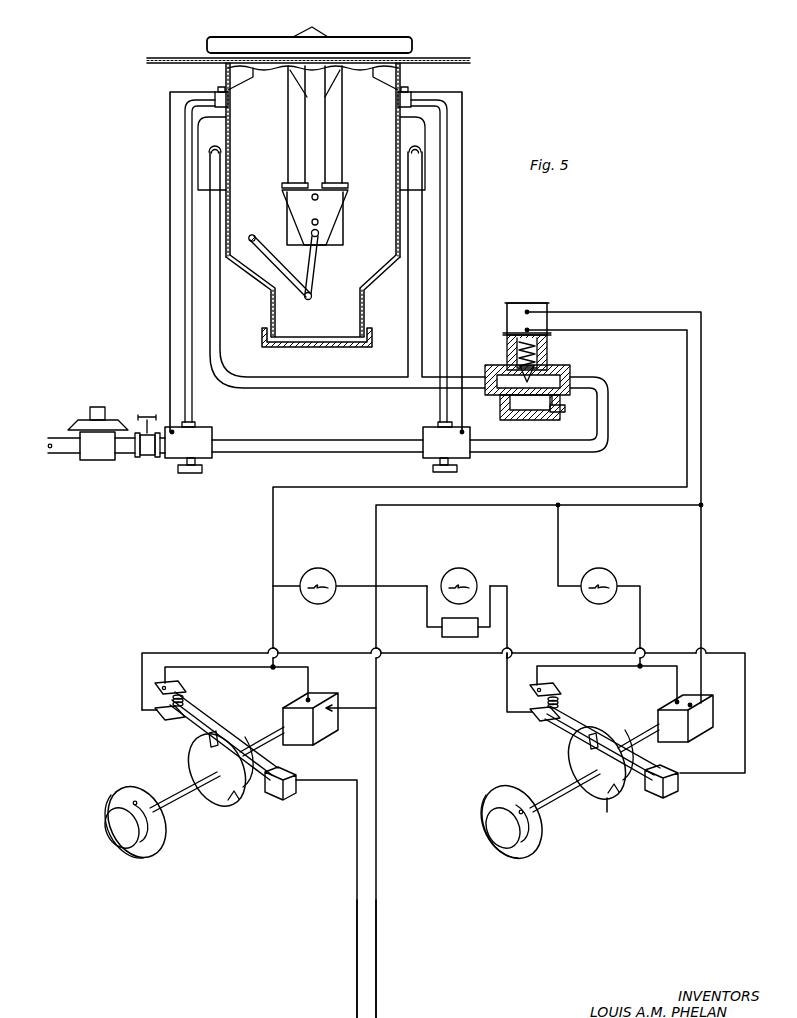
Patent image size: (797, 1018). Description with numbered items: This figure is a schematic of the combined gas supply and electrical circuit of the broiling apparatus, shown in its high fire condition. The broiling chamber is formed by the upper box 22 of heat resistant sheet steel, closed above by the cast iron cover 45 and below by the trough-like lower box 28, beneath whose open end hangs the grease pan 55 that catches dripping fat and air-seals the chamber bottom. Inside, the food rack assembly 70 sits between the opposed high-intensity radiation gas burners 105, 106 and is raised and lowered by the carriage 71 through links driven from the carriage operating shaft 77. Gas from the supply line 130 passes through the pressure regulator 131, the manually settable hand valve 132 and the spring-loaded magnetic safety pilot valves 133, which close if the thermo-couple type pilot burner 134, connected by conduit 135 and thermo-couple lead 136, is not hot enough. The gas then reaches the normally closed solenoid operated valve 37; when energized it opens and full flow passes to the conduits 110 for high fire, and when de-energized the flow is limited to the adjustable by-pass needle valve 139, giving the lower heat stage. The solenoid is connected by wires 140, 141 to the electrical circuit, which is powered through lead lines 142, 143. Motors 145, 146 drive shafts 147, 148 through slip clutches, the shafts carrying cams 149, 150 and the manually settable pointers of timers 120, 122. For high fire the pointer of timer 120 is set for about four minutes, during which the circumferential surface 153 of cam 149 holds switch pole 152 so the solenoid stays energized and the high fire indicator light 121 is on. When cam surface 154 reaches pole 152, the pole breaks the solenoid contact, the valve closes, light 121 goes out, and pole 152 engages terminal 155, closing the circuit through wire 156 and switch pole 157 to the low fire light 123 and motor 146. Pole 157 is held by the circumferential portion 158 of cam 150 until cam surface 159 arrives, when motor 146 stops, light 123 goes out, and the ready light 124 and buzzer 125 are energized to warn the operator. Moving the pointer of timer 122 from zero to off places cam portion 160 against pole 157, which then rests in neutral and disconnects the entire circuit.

The cover 45 is at (345, 50).
The upper box 22 is at (400, 222).
The bottom trough-like structure 28 is at (360, 292).
The grease pan 55 is at (372, 345).
The food rack assembly 70 is at (299, 141).
The carriage 71 is at (296, 206).
The carriage operating shaft 77 is at (262, 234).
The thermo-couple type pilot burner 134 is at (222, 96).
The high-intensity radiation gas burner 105 is at (205, 140).
The high-intensity radiation gas burner 106 is at (420, 140).
The thermo-couple lead 136 is at (170, 207).
The conduit 135 is at (185, 265).
The conduits 110 is at (366, 383).
The solenoid valve 37 is at (544, 368).
The needle valve 139 is at (546, 416).
The wire 140 is at (626, 312).
The wire 141 is at (624, 330).
The gas supply line 130 is at (63, 455).
The pressure regulator 131 is at (98, 432).
The hand valve 132 is at (148, 458).
The automatic safety pilot valves 133 is at (205, 456).
The high fire indicator light 121 is at (328, 556).
The ready light 124 is at (470, 557).
The low fire indicator light 123 is at (614, 575).
The buzzer 125 is at (452, 634).
The wire 156 is at (240, 653).
The motor 145 is at (330, 735).
The motor 146 is at (703, 735).
The switch pole 152 is at (205, 714).
The terminal 155 is at (172, 718).
The circumferential surface 153 is at (207, 738).
The cam 149 is at (211, 765).
The cam surface 154 is at (238, 805).
The shaft 147 is at (179, 806).
The timer 120 is at (110, 800).
The switch pole 157 is at (586, 720).
The circumferential portion 158 is at (585, 739).
The cam 150 is at (586, 754).
The cam surface 159 is at (618, 796).
The cam portion 160 is at (605, 818).
The shaft 148 is at (555, 806).
The timer 122 is at (503, 800).
The lead line 142 is at (356, 1006).
The lead line 143 is at (396, 1017).